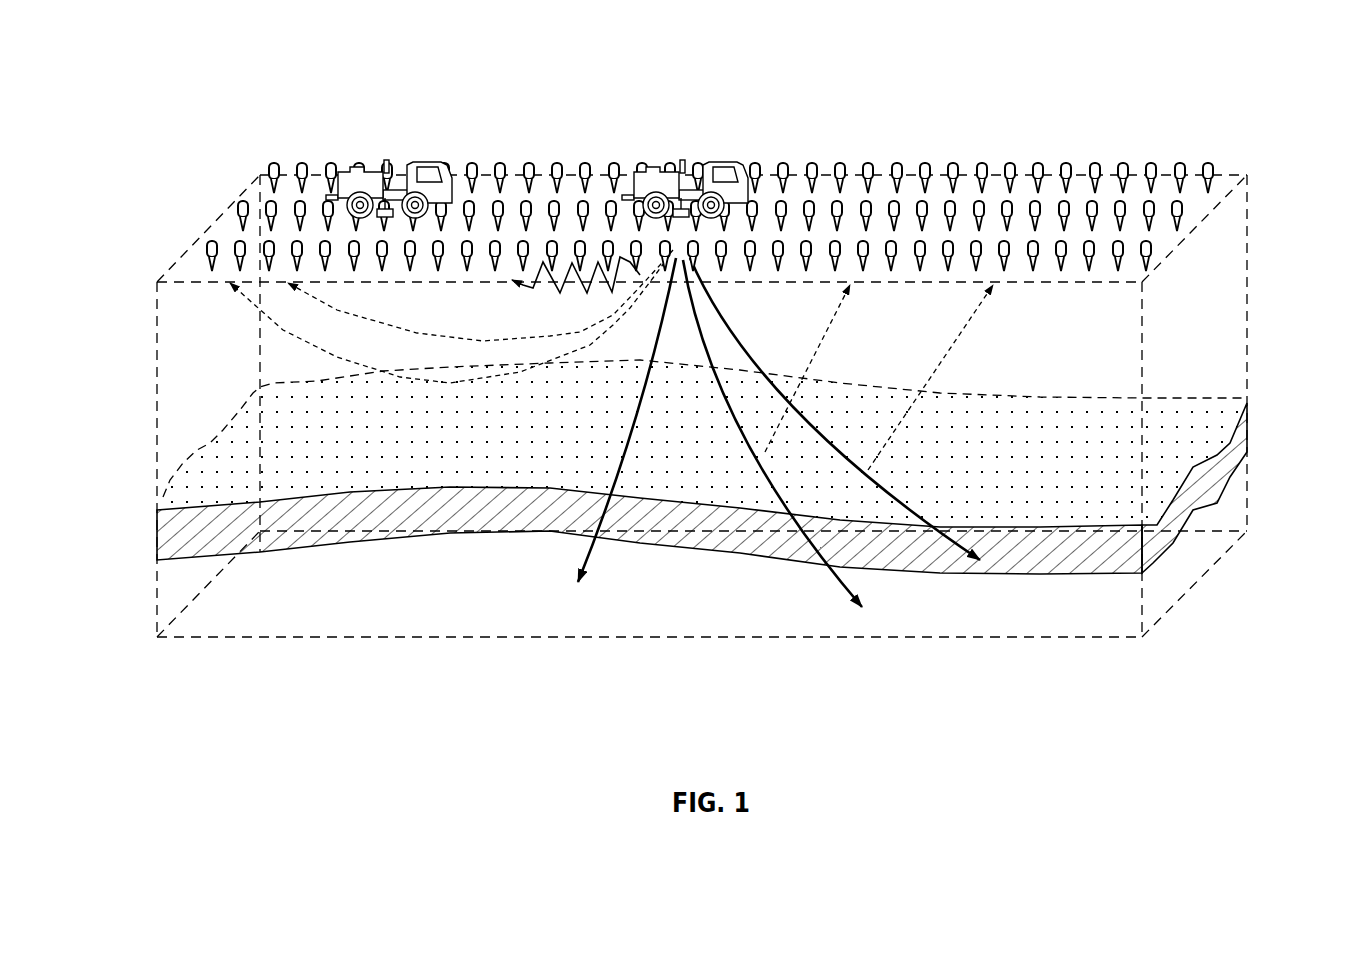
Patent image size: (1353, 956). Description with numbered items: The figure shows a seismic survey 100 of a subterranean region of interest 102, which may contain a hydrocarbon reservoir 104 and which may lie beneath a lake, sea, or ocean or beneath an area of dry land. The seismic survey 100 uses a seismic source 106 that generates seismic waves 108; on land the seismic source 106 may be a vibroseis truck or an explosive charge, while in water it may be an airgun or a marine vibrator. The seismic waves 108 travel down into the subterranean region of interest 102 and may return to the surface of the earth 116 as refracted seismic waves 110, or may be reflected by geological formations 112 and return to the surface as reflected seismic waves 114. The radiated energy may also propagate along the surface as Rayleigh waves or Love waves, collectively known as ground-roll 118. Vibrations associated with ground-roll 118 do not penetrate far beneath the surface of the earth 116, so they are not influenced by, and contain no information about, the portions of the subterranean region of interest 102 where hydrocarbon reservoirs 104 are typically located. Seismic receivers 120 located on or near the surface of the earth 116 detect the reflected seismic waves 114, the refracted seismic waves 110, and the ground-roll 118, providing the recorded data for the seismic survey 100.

The seismic survey 100 is at (1255, 85).
The subterranean region of interest 102 is at (1083, 607).
The hydrocarbon reservoir 104 is at (160, 540).
The seismic source 106 is at (372, 170).
The seismic waves 108 is at (593, 550).
The refracted seismic waves 110 is at (350, 318).
The geological formations 112 is at (1147, 580).
The reflected seismic waves 114 is at (853, 300).
The surface of the earth 116 is at (202, 236).
The ground-roll 118 is at (515, 287).
The seismic receivers 120 is at (1122, 160).